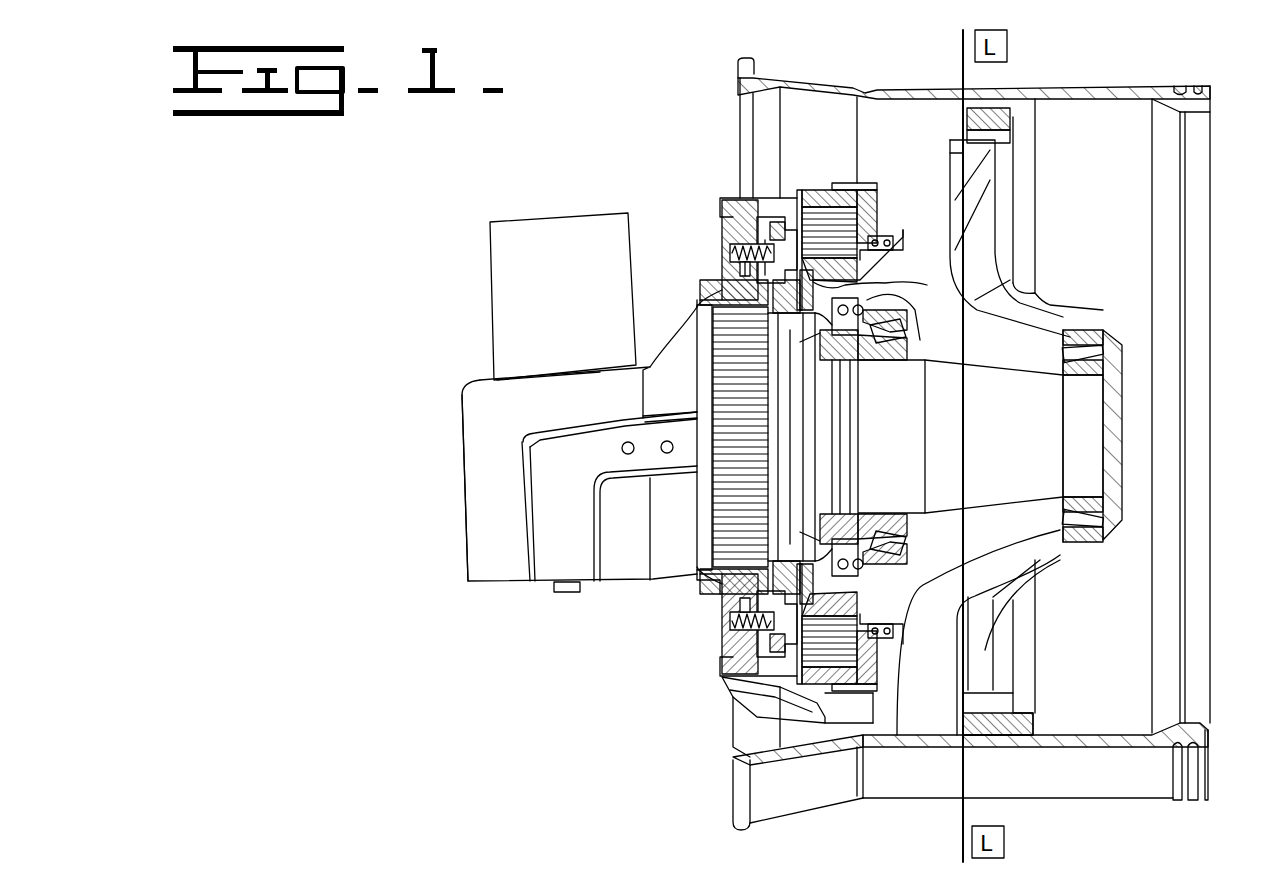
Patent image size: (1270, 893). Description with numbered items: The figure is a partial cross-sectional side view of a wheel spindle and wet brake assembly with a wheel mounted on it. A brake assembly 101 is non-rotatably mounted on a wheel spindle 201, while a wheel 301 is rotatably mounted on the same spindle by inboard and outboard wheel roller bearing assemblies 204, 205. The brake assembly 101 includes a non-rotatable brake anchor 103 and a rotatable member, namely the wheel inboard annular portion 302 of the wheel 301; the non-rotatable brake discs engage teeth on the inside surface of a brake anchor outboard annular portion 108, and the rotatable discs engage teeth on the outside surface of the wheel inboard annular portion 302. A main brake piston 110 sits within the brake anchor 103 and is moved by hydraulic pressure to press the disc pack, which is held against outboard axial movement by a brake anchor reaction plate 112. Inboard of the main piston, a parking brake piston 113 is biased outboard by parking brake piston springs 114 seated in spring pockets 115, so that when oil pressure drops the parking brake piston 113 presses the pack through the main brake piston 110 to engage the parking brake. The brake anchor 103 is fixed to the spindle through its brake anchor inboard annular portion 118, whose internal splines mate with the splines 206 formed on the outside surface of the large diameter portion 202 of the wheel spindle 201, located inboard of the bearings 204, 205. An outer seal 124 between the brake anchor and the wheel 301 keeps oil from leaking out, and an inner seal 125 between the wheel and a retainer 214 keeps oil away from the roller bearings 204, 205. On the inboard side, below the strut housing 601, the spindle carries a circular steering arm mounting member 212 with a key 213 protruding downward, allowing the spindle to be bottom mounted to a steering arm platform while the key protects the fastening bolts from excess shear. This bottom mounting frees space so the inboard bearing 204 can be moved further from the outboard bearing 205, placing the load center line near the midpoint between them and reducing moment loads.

The brake assembly 101 is at (724, 176).
The brake anchor 103 is at (735, 684).
The brake anchor outboard annular portion 108 is at (820, 188).
The main brake piston 110 is at (787, 198).
The brake anchor reaction plate 112 is at (878, 190).
The parking brake piston 113 is at (768, 233).
The parking brake piston springs 114 is at (740, 250).
The spring pockets 115 is at (745, 263).
The brake anchor inboard annular portion 118 is at (710, 580).
The outer seal 124 is at (880, 232).
The inner seal 125 is at (900, 307).
The wheel spindle 201 is at (543, 597).
The large diameter portion 202 is at (707, 353).
The inboard roller bearing 204 is at (893, 543).
The outboard roller bearing 205 is at (1063, 524).
The splines 206 is at (733, 478).
The steering arm mounting member 212 is at (490, 567).
The key 213 is at (577, 588).
The retainer 214 is at (842, 377).
The wheel 301 is at (975, 634).
The wheel inboard annular portion 302 is at (866, 268).
The strut housing 601 is at (543, 215).